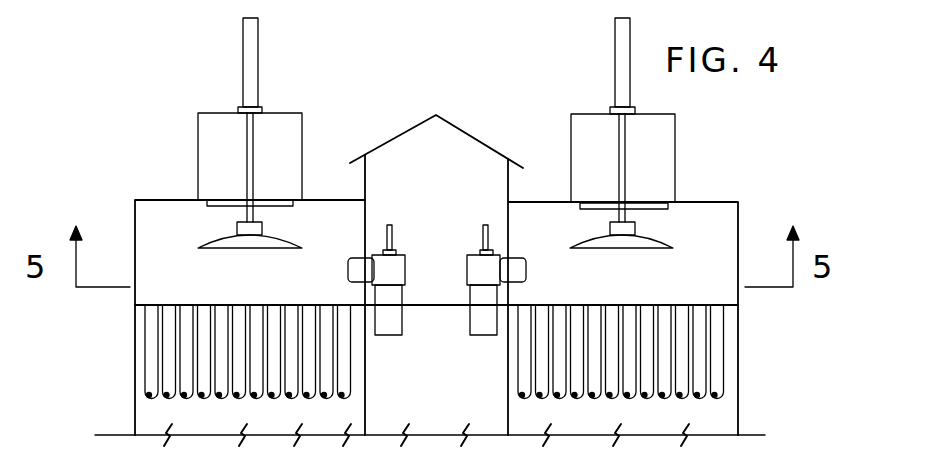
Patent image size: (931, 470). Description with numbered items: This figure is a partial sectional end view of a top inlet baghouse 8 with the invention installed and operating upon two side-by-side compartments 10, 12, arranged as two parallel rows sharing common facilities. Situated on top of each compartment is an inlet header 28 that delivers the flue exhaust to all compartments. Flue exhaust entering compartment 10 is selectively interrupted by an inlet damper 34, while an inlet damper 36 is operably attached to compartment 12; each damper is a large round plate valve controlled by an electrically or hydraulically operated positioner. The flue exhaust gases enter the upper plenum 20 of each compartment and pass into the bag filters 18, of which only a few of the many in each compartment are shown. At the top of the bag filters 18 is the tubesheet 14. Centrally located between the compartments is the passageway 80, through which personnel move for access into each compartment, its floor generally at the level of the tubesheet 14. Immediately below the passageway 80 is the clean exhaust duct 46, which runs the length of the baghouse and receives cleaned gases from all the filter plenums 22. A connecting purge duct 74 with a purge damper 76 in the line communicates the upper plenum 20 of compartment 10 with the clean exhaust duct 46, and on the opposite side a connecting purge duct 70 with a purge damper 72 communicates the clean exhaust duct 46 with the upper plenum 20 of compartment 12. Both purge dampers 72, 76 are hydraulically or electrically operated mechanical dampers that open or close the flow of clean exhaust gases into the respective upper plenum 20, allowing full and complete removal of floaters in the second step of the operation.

The top inlet baghouse 8 is at (495, 33).
The compartment 10 is at (158, 200).
The compartment 12 is at (710, 202).
The tubesheet 14 is at (142, 305).
The bag filters 18 is at (145, 378).
The upper plenum 20 is at (298, 279).
The filter plenum 22 is at (340, 429).
The inlet header 28 is at (280, 113).
The inlet damper 34 is at (216, 247).
The inlet damper 36 is at (640, 249).
The clean exhaust duct 46 is at (455, 389).
The connecting purge duct 70 is at (480, 297).
The purge damper 72 is at (489, 244).
The connecting purge duct 74 is at (393, 301).
The purge damper 76 is at (392, 233).
The passageway 80 is at (455, 254).